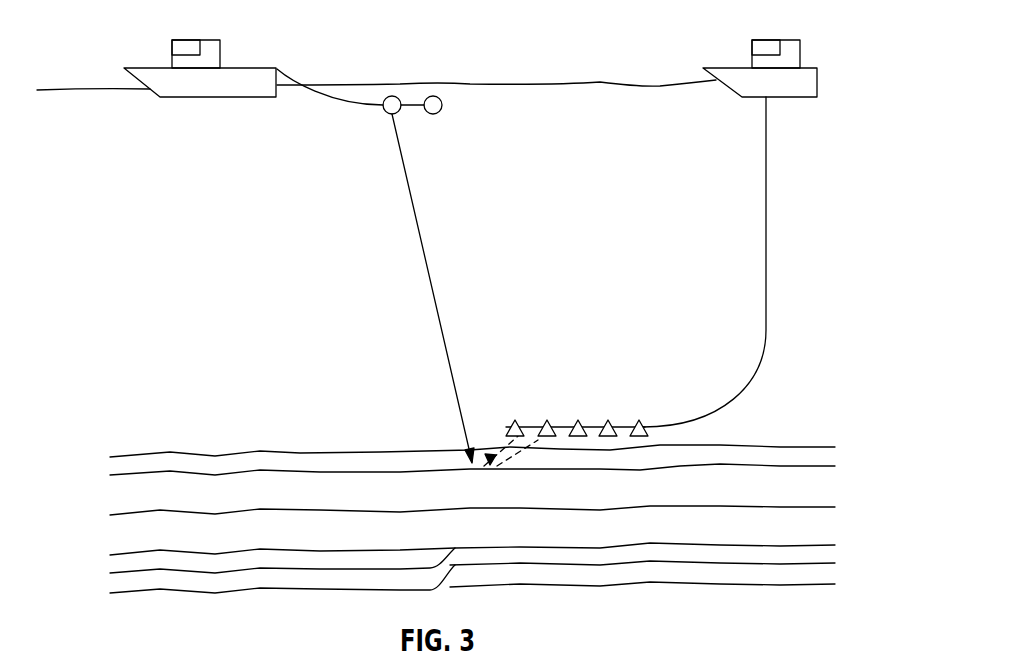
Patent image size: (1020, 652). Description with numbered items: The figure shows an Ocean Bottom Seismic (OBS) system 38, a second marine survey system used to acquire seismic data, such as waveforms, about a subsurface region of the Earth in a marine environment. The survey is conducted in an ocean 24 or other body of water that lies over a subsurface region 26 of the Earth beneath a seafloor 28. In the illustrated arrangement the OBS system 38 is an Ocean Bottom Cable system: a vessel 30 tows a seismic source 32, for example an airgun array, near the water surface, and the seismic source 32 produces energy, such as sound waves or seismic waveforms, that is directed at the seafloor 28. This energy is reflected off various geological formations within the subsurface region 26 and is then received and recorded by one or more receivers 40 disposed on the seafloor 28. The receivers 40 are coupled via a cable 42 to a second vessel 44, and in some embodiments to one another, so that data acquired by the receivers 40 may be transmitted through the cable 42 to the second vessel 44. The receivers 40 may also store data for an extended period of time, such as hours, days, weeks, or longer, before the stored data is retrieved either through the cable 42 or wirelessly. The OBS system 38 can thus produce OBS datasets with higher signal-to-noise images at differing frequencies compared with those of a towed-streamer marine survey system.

The ocean 24 is at (404, 279).
The subsurface region 26 is at (439, 518).
The seafloor 28 is at (247, 453).
The vessel 30 is at (205, 40).
The seismic source 32 is at (392, 96).
The Ocean Bottom Seismic (OBS) system 38 is at (597, 28).
The receivers 40 is at (515, 420).
The cable 42 is at (766, 262).
The second vessel 44 is at (790, 40).